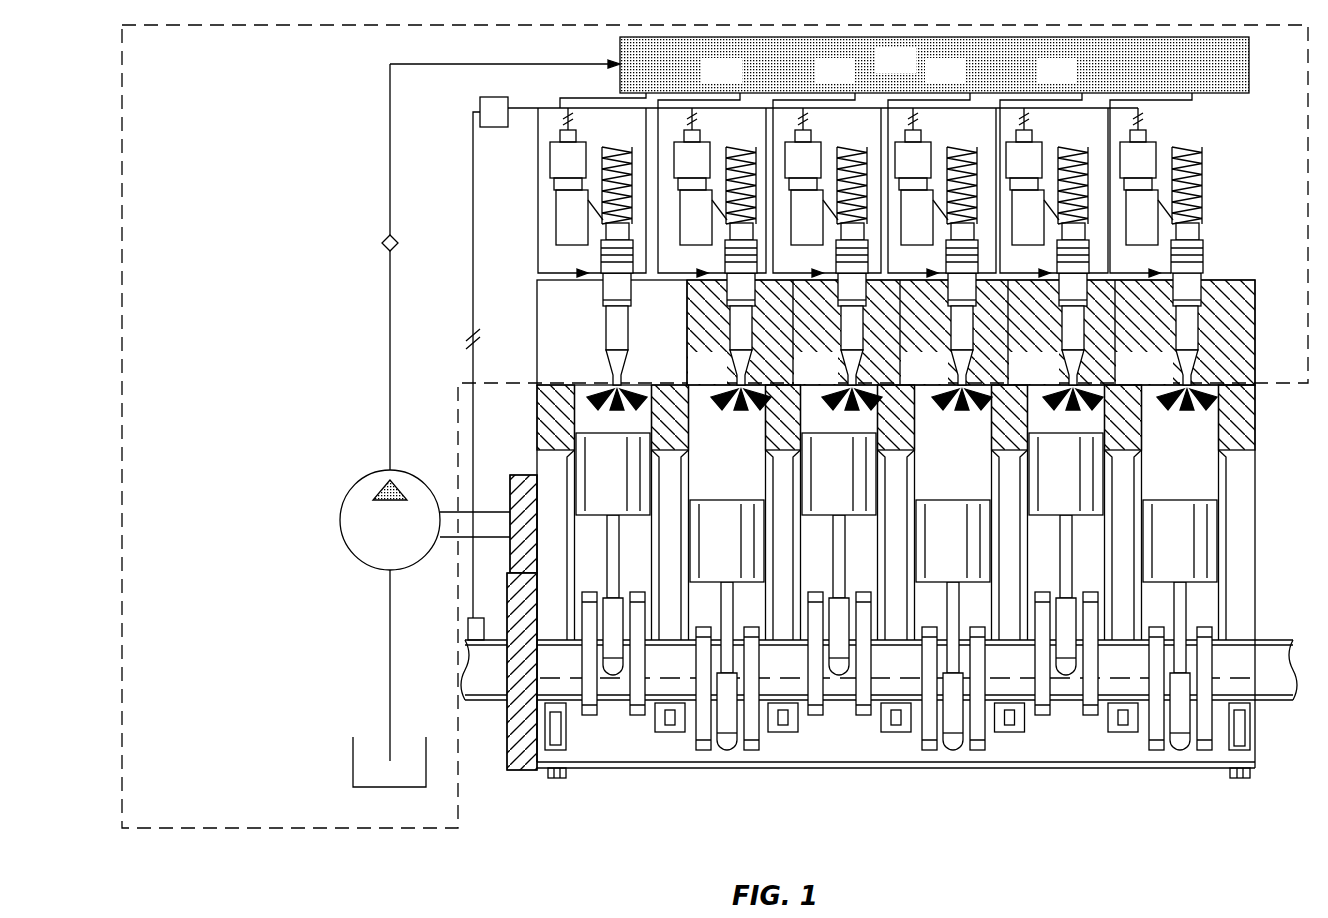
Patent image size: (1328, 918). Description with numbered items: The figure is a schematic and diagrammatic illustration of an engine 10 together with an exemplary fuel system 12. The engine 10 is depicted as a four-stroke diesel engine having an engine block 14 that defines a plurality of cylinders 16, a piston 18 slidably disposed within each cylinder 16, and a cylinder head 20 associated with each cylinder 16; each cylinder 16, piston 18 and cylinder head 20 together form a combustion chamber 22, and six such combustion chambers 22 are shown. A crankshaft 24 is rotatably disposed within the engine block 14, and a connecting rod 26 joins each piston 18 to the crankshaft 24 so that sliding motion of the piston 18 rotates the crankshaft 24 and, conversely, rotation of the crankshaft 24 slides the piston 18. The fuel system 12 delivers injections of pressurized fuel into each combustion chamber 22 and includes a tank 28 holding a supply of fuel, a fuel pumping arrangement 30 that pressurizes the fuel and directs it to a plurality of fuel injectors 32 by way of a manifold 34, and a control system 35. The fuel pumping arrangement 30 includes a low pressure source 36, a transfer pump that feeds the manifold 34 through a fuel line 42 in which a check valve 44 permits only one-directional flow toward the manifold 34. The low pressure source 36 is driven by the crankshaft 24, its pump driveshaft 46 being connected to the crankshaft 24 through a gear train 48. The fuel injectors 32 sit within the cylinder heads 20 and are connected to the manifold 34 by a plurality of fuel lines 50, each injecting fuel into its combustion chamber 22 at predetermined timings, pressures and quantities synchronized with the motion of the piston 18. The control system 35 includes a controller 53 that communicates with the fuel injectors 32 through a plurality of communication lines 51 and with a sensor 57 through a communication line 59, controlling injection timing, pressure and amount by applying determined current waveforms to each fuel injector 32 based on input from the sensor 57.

The engine 10 is at (942, 790).
The fuel system 12 is at (122, 398).
The engine block 14 is at (1240, 493).
The cylinder 16 is at (595, 559).
The piston 18 is at (592, 485).
The cylinder head 20 is at (567, 381).
The combustion chamber 22 is at (581, 431).
The crankshaft 24 is at (1268, 667).
The connecting rod 26 is at (619, 564).
The tank 28 is at (353, 767).
The fuel pumping arrangement 30 is at (248, 408).
The fuel injector 32 is at (564, 242).
The manifold 34 is at (882, 72).
The control system 35 is at (458, 160).
The low pressure source 36 is at (376, 543).
The fuel line 42 is at (388, 182).
The check valve 44 is at (382, 243).
The pump driveshaft 46 is at (487, 518).
The gear train 48 is at (525, 758).
The fuel line 50 is at (537, 168).
The communication line 51 is at (568, 112).
The controller 53 is at (480, 104).
The sensor 57 is at (470, 622).
The communication line 59 is at (473, 302).